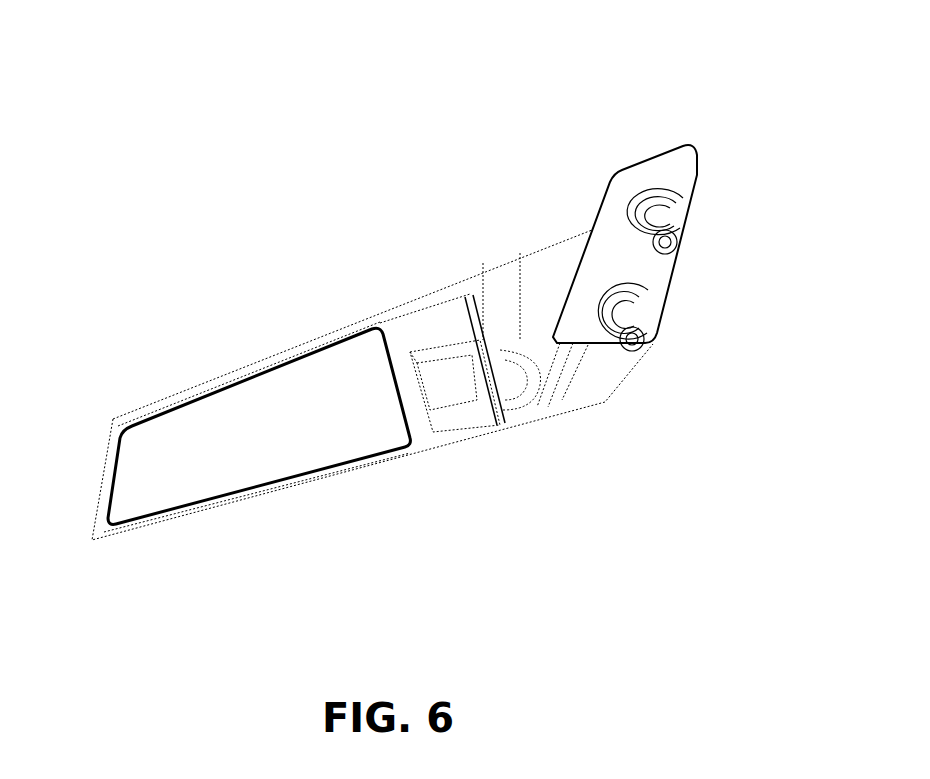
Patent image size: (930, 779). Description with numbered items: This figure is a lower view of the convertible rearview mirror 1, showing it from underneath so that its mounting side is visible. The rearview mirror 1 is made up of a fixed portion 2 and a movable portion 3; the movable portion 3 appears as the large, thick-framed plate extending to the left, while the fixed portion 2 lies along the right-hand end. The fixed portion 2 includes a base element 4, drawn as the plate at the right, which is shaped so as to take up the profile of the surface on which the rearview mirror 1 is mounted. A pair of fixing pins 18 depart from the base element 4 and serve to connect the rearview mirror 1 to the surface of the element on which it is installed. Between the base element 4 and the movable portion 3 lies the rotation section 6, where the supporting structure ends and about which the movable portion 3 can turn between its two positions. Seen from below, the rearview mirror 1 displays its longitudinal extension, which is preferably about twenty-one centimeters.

The rearview mirror 1 is at (714, 128).
The fixed portion 2 is at (542, 258).
The movable portion 3 is at (197, 383).
The base element 4 is at (578, 348).
The rotation section 6 is at (462, 295).
The fixing pins 18 is at (667, 217).